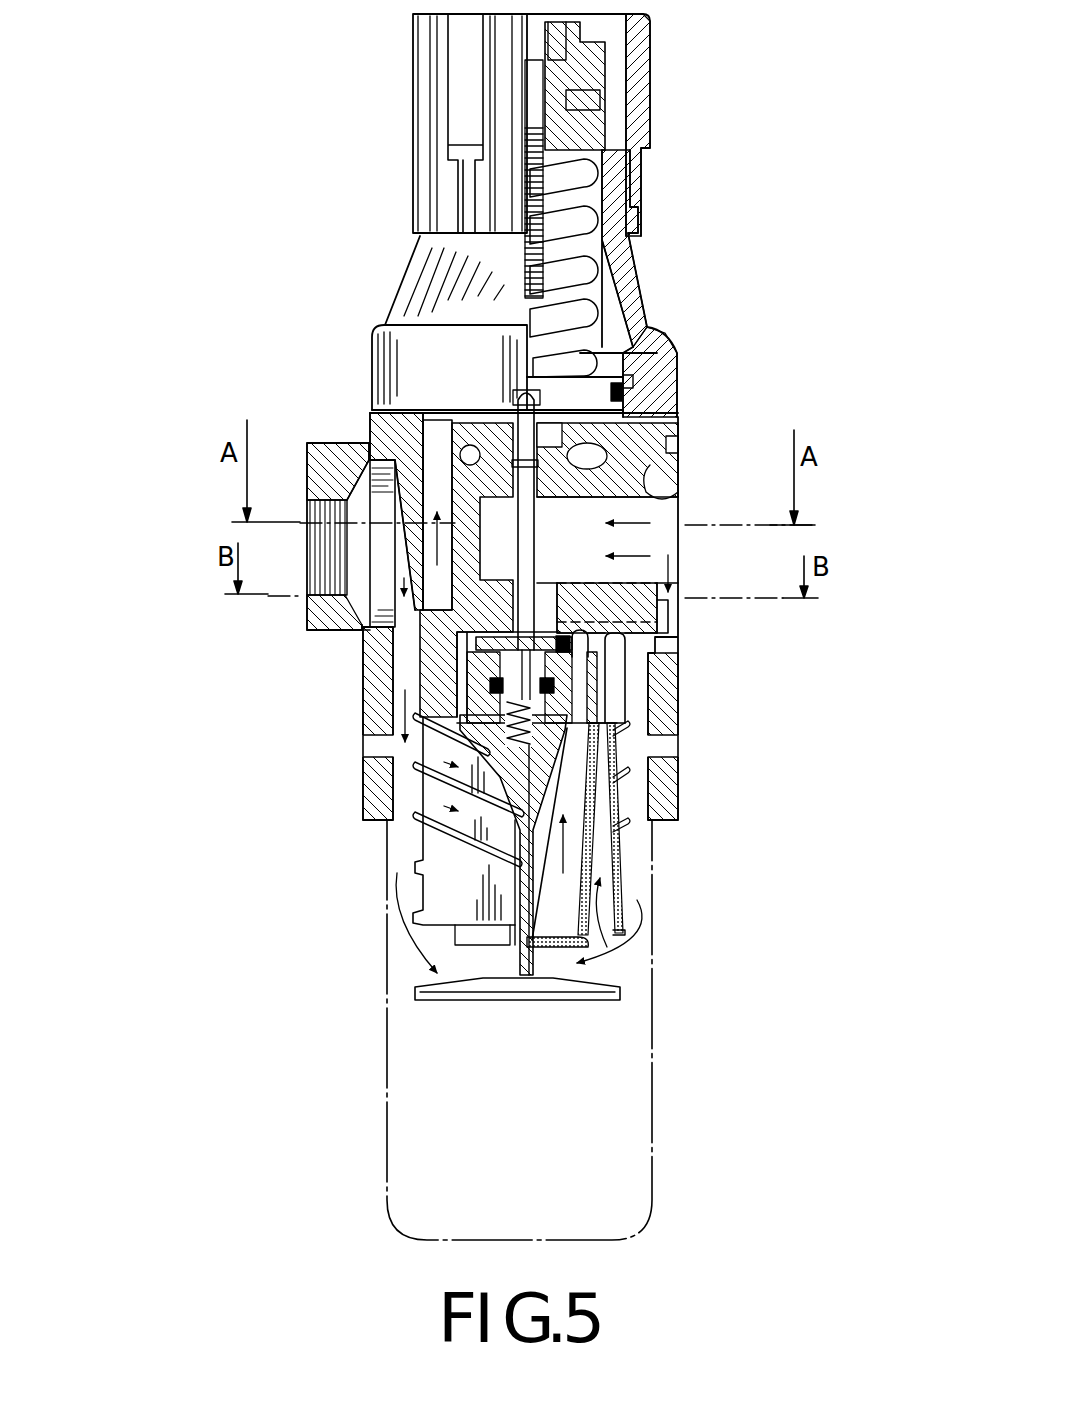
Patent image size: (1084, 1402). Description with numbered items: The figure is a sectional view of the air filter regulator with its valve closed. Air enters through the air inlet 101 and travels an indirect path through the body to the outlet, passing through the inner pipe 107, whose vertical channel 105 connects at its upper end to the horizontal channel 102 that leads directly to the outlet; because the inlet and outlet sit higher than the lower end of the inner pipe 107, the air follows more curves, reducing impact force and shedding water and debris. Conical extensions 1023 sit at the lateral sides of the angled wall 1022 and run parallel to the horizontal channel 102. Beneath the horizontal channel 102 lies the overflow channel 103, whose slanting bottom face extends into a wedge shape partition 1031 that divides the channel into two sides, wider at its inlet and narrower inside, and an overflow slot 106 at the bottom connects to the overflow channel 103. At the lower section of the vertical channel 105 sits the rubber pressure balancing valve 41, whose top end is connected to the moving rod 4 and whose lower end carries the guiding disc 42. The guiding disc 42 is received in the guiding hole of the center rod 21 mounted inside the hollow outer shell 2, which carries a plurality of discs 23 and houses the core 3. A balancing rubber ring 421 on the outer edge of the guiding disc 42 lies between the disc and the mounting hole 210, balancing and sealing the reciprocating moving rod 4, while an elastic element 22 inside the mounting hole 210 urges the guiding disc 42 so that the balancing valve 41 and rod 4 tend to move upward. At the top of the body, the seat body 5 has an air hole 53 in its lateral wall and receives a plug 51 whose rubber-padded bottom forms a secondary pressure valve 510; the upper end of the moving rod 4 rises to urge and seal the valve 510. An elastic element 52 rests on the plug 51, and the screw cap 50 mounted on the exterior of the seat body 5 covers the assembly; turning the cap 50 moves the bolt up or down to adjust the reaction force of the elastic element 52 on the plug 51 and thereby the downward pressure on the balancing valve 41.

The outer shell 2 is at (408, 862).
The core 3 is at (527, 897).
The moving rod 4 is at (520, 540).
The seat body 5 is at (640, 312).
The center rod 21 is at (567, 917).
The elastic element 22 is at (560, 780).
The disc 23 is at (455, 822).
The pressure balancing valve 41 is at (440, 677).
The guiding disc 42 is at (618, 772).
The screw cap 50 is at (650, 48).
The plug 51 is at (680, 426).
The elastic element 52 is at (640, 210).
The air hole 53 is at (641, 268).
The air inlet 101 is at (345, 602).
The horizontal channel 102 is at (657, 543).
The overflow channel 103 is at (620, 615).
The vertical channel 105 is at (660, 672).
The overflow slot 106 is at (427, 543).
The inner pipe 107 is at (372, 676).
The mounting hole 210 is at (618, 820).
The balancing rubber ring 421 is at (455, 758).
The secondary pressure valve 510 is at (670, 358).
The angled wall 1022 is at (423, 503).
The conical extensions 1023 is at (453, 497).
The wedge shape partition 1031 is at (660, 627).